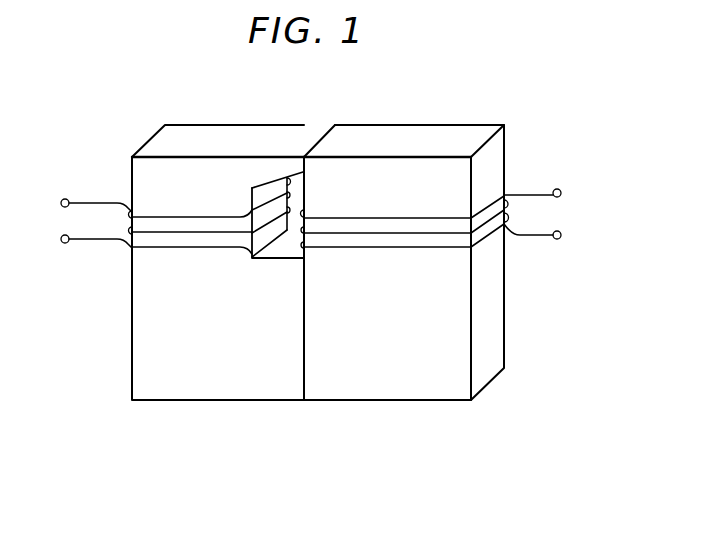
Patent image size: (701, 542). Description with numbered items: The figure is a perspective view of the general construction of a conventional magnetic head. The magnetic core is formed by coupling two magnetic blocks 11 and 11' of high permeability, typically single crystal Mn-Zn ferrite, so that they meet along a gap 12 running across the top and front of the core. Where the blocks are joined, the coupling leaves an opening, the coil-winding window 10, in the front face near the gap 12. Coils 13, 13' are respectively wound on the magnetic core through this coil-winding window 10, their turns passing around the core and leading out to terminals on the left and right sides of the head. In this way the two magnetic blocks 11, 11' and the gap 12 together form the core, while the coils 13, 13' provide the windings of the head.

The coil-winding window 10 is at (304, 187).
The magnetic block 11 is at (218, 282).
The magnetic block 11' is at (404, 282).
The gap 12 is at (313, 147).
The coil 13 is at (156, 243).
The coil 13' is at (439, 240).